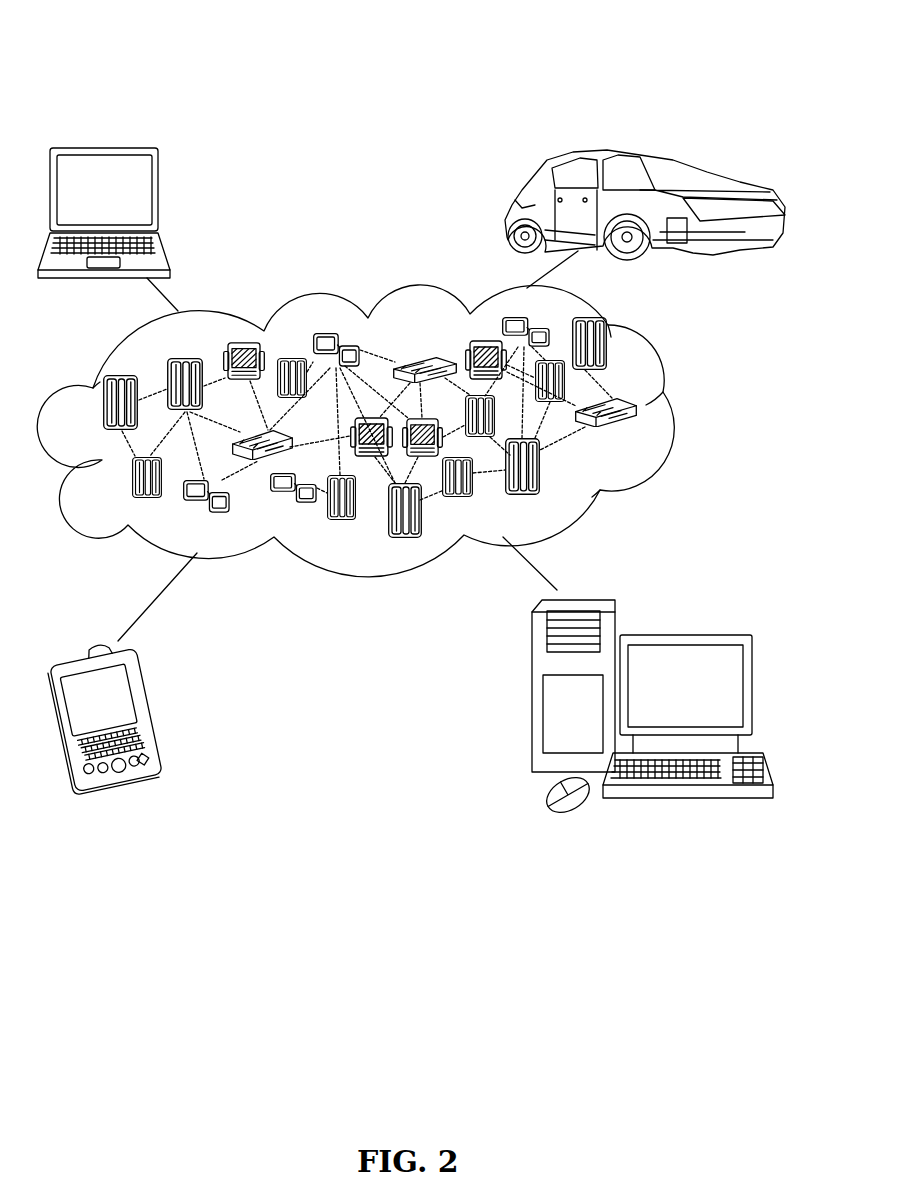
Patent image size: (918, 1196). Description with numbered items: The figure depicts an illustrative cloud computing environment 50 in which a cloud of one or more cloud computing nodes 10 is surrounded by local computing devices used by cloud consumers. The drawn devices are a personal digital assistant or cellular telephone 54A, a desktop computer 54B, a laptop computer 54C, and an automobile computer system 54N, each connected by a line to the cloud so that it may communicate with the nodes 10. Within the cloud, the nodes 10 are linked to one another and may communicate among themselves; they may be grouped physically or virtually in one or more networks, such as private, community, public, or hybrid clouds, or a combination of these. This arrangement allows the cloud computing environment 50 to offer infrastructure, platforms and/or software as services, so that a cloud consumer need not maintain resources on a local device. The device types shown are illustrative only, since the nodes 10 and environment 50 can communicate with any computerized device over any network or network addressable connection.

The cloud computing environment 50 is at (200, 40).
The cloud computing nodes 10 is at (636, 431).
The personal digital assistant (PDA) or cellular telephone 54A is at (152, 707).
The desktop computer 54B is at (693, 620).
The laptop computer 54C is at (162, 198).
The automobile computer system 54N is at (510, 212).